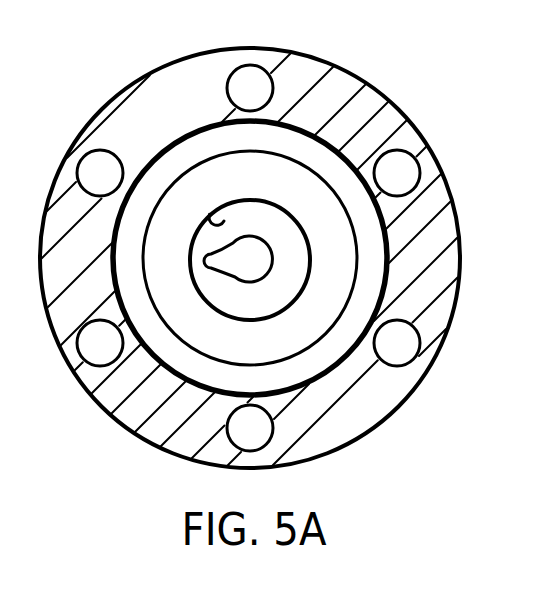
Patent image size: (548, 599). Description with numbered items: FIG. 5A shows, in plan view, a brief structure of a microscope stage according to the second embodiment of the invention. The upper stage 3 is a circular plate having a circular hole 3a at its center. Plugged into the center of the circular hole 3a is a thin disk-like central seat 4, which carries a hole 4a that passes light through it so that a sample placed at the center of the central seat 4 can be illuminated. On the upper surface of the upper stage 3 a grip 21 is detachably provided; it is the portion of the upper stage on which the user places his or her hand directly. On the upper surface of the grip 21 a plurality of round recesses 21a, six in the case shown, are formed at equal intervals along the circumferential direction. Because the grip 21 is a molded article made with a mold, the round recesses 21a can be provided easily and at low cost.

The grip 21 is at (353, 112).
The round recesses 21a is at (255, 78).
The upper stage 3 is at (293, 142).
The circular hole 3a is at (260, 247).
The central seat 4 is at (228, 211).
The hole 4a is at (180, 188).